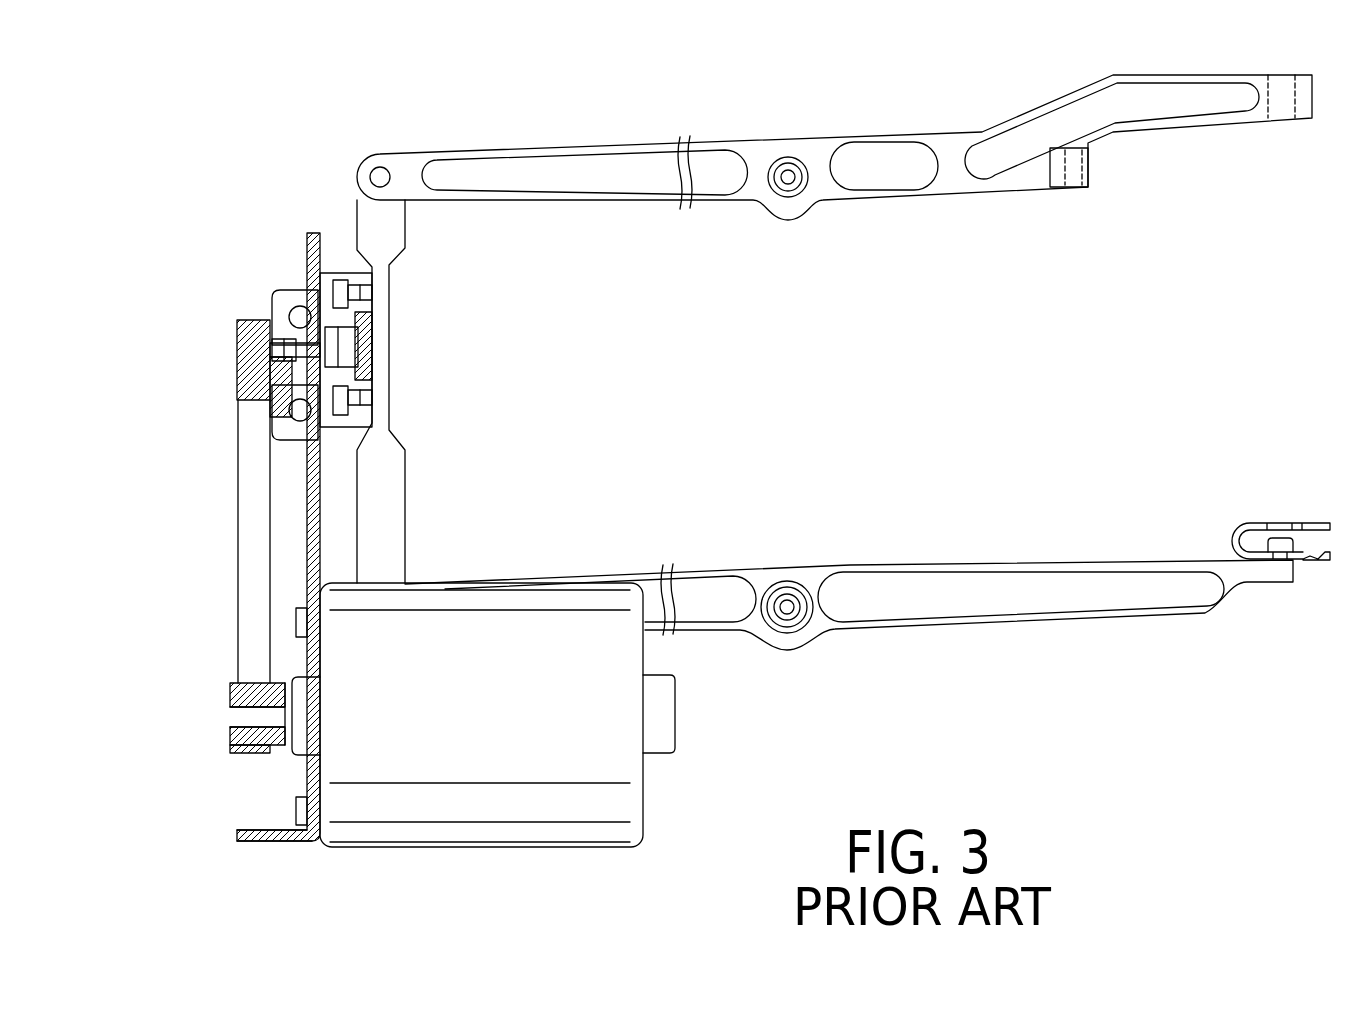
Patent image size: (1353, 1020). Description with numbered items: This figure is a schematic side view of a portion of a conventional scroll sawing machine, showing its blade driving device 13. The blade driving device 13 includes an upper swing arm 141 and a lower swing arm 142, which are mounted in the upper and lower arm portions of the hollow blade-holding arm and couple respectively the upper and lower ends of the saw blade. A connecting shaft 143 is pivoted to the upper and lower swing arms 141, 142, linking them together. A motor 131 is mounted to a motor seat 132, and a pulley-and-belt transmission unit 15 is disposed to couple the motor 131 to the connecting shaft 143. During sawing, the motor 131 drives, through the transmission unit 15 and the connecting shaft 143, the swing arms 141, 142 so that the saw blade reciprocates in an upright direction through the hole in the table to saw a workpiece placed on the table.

The blade driving device 13 is at (495, 848).
The motor 131 is at (395, 842).
The motor seat 132 is at (270, 842).
The pulley-and-belt transmission unit 15 is at (238, 523).
The upper swing arm 141 is at (950, 175).
The lower swing arm 142 is at (893, 627).
The connecting shaft 143 is at (400, 227).